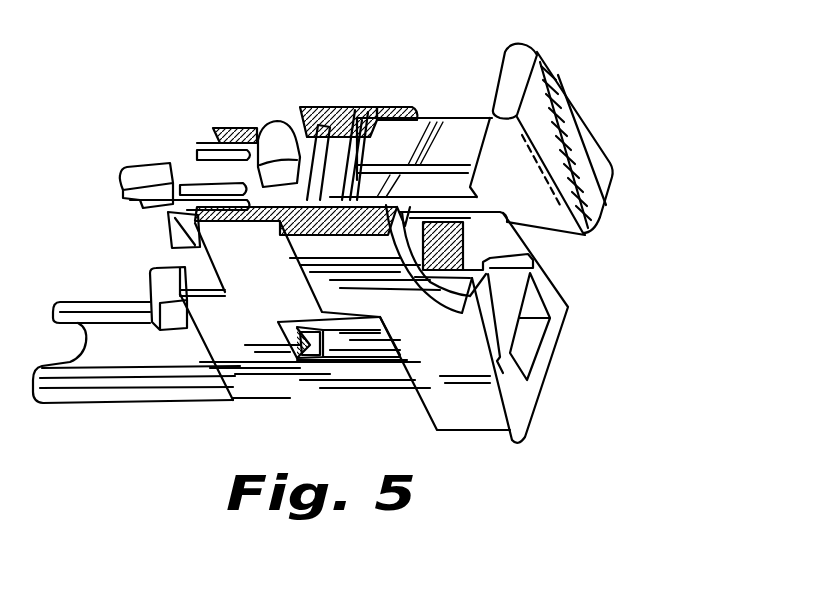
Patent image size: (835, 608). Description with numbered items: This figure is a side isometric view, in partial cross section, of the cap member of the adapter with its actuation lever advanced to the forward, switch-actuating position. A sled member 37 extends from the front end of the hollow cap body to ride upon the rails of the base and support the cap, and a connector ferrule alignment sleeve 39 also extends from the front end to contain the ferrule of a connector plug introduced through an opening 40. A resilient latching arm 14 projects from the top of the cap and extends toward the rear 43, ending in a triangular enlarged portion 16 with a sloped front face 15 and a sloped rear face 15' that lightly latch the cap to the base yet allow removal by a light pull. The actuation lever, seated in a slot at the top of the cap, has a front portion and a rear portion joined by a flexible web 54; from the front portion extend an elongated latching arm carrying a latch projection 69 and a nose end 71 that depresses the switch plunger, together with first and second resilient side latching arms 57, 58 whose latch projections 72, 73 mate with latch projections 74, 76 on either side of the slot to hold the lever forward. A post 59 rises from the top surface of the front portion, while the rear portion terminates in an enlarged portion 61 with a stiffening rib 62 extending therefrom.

The latching arm 14 is at (353, 343).
The sloped front face 15 is at (268, 387).
The sloped rear face 15' is at (361, 400).
The enlarged portion 16 is at (300, 322).
The sled member 37 is at (138, 390).
The connector ferrule alignment sleeve 39 is at (160, 293).
The opening 40 is at (487, 243).
The rear 43 is at (537, 413).
The flexible web 54 is at (357, 133).
The first side latching arm 57 is at (198, 153).
The second side latching arm 58 is at (200, 187).
The post 59 is at (293, 130).
The enlarged portion 61 is at (570, 100).
The stiffening rib 62 is at (453, 117).
The latch projection 69 is at (130, 207).
The nose end 71 is at (123, 178).
The latch projection 72 is at (200, 147).
The latch projection 73 is at (167, 228).
The latch projection 74 is at (280, 133).
The latch projection 76 is at (227, 225).